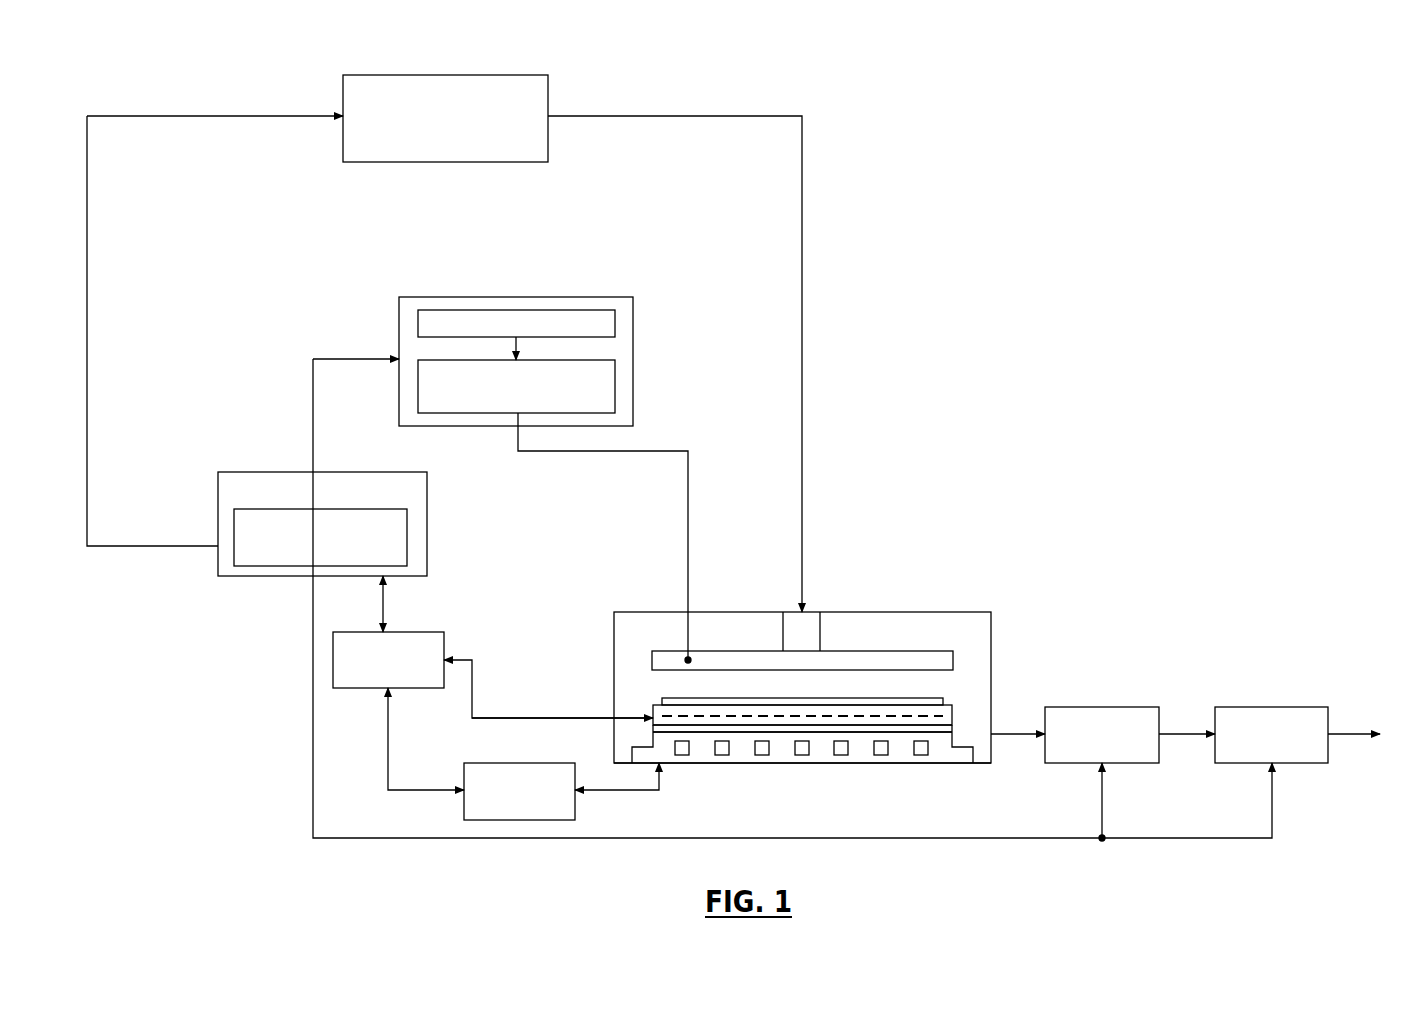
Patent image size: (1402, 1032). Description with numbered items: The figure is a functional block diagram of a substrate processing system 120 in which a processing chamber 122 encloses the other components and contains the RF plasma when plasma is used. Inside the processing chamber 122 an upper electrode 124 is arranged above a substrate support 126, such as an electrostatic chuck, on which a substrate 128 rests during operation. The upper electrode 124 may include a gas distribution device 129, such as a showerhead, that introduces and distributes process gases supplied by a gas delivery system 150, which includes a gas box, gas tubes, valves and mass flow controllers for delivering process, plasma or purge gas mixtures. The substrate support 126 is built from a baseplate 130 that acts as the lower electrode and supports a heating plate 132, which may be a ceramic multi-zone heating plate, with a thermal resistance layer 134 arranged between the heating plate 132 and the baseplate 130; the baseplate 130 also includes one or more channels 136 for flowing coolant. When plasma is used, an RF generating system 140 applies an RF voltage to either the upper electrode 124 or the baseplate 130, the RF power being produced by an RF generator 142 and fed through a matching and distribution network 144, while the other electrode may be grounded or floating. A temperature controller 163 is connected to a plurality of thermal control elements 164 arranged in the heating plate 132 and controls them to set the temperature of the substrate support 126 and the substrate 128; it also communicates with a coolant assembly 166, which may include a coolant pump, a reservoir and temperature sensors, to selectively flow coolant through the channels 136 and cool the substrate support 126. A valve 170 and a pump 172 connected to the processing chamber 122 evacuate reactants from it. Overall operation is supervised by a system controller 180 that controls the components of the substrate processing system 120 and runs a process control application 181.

The substrate processing system 120 is at (1053, 182).
The processing chamber 122 is at (913, 612).
The upper electrode 124 is at (942, 651).
The substrate support 126 is at (970, 715).
The substrate 128 is at (943, 698).
The gas distribution device 129 is at (851, 651).
The baseplate 130 is at (820, 763).
The heating plate 132 is at (707, 725).
The thermal resistance layer 134 is at (785, 732).
The channels 136 is at (922, 755).
The RF generating system 140 is at (399, 317).
The RF generator 142 is at (615, 323).
The matching and distribution network 144 is at (615, 371).
The gas delivery system 150 is at (343, 88).
The temperature controller 163 is at (443, 632).
The thermal control elements 164 is at (762, 716).
The coolant assembly 166 is at (464, 803).
The valve 170 is at (1114, 707).
The pump 172 is at (1253, 707).
The system controller 180 is at (245, 472).
The process control application 181 is at (234, 528).